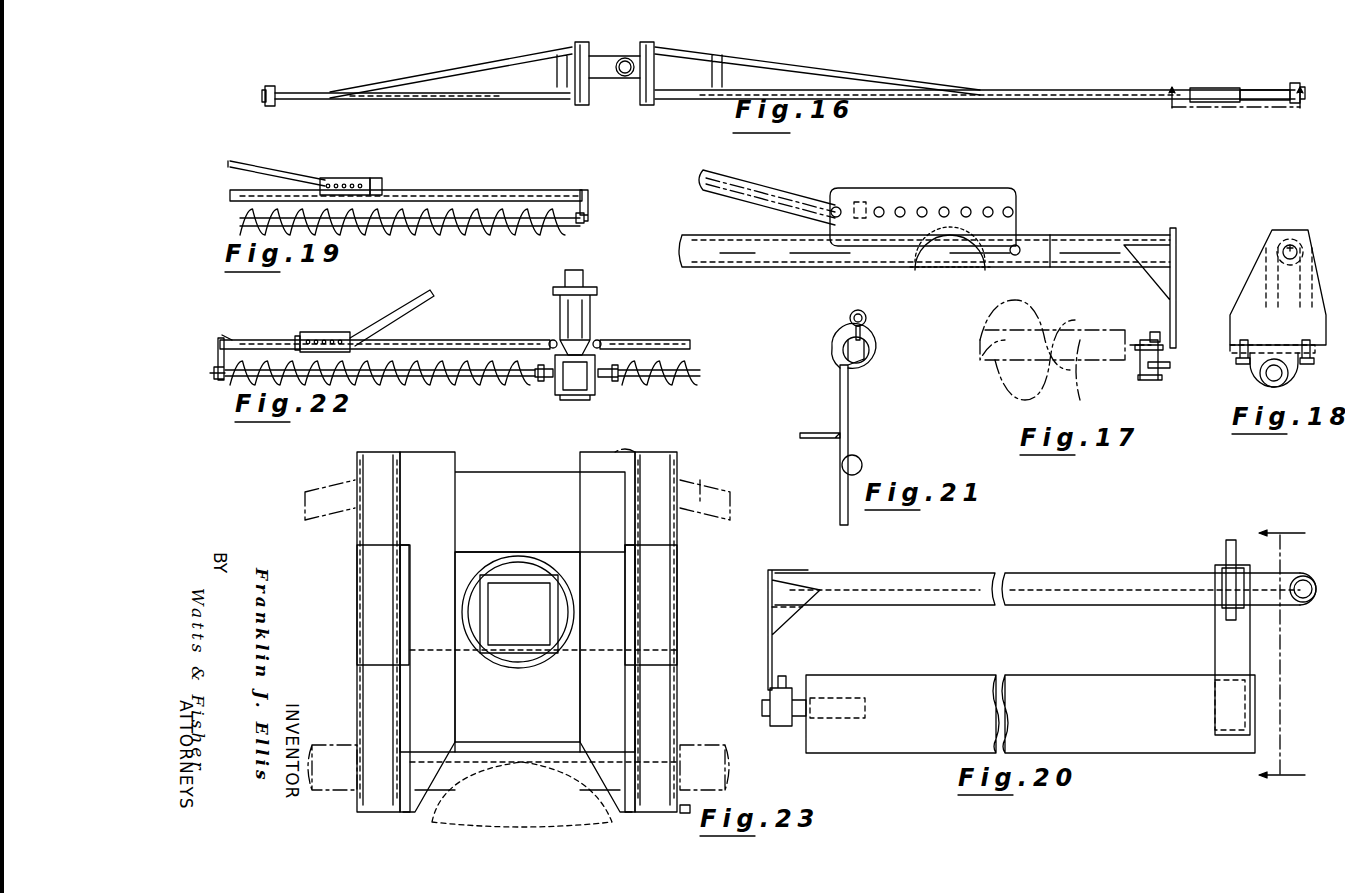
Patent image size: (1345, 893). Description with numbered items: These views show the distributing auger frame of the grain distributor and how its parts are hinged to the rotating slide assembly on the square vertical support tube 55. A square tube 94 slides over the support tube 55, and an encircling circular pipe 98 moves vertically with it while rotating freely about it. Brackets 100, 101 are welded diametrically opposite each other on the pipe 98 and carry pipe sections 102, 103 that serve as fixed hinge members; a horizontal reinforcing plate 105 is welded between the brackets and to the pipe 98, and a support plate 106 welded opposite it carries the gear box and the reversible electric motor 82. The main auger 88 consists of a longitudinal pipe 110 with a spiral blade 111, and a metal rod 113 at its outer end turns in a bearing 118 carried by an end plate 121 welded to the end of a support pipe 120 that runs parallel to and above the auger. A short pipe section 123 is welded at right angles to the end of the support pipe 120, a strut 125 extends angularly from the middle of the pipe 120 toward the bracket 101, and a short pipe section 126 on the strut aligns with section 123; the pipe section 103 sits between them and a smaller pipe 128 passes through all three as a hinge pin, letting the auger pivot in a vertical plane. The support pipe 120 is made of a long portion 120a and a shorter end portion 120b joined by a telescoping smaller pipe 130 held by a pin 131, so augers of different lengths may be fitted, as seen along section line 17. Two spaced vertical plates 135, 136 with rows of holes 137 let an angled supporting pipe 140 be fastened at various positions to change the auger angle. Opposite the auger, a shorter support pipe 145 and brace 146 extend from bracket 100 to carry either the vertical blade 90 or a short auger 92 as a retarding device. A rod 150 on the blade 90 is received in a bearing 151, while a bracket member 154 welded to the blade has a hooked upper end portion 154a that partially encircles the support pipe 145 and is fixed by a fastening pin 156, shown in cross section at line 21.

In FIG. 16, the section line 17- 17 is at (1241, 117).
In FIG. 20, the section line 21- 21 is at (1297, 655).
In FIG. 23, the square vertical support tube 55 is at (538, 619).
In FIG. 23, the reversible electric motor 82 is at (473, 785).
In FIG. 19, the auger 88 is at (423, 228).
In FIG. 22, the auger 88 is at (670, 393).
In FIG. 17, the auger 88 is at (982, 402).
In FIG. 21, the vertical blade 90 is at (836, 488).
In FIG. 20, the vertical blade 90 is at (930, 754).
In FIG. 22, the short auger 92 is at (434, 390).
In FIG. 23, the square tube 94 is at (494, 668).
In FIG. 16, the circular pipe 98 is at (624, 54).
In FIG. 23, the circular pipe 98 is at (551, 560).
In FIG. 23, the bracket 100 is at (450, 735).
In FIG. 23, the bracket 101 is at (615, 735).
In FIG. 16, the pipe section 102 is at (580, 58).
In FIG. 23, the pipe section 102 is at (355, 587).
In FIG. 16, the pipe section 103 is at (660, 60).
In FIG. 23, the pipe section 103 is at (670, 600).
In FIG. 23, the reinforcing plate 105 is at (513, 474).
In FIG. 23, the support plate 106 is at (561, 733).
In FIG. 17, the longitudinal pipe 110 is at (1067, 366).
In FIG. 17, the spiral blade 111 is at (1044, 338).
In FIG. 17, the metal rod 113 is at (1148, 378).
In FIG. 16, the bearing 118 is at (1296, 82).
In FIG. 19, the bearing 118 is at (587, 222).
In FIG. 17, the bearing 118 is at (1160, 368).
In FIG. 18, the bearing 118 is at (1292, 375).
In FIG. 16, the support pipe 120 is at (1002, 96).
In FIG. 19, the support pipe 120 is at (236, 190).
In FIG. 22, the support pipe 120 is at (668, 340).
In FIG. 17, the support pipe 120 is at (718, 268).
In FIG. 23, the support pipe 120 is at (692, 742).
In FIG. 17, the long portion of support pipe 120a is at (919, 268).
In FIG. 17, the shorter end portion of support pipe 120b is at (1088, 268).
In FIG. 18, the shorter end portion of support pipe 120b is at (1287, 232).
In FIG. 17, the end plate 121 is at (1170, 308).
In FIG. 18, the end plate 121 is at (1265, 266).
In FIG. 23, the short pipe section 123 is at (680, 810).
In FIG. 16, the strut 125 is at (864, 66).
In FIG. 23, the strut 125 is at (710, 523).
In FIG. 23, the short pipe section 126 is at (686, 480).
In FIG. 23, the pipe 128 is at (663, 450).
In FIG. 17, the smaller diameter pipe 130 is at (965, 265).
In FIG. 17, the pin 131 is at (1018, 248).
In FIG. 16, the vertical plate 135 is at (1220, 115).
In FIG. 19, the vertical plate 135 is at (375, 178).
In FIG. 22, the vertical plate 135 is at (295, 336).
In FIG. 17, the vertical plate 135 is at (1016, 194).
In FIG. 16, the vertical plate 136 is at (1205, 86).
In FIG. 19, the holes 137 is at (350, 178).
In FIG. 22, the holes 137 is at (313, 330).
In FIG. 17, the holes 137 is at (923, 206).
In FIG. 19, the angled supporting pipe 140 is at (280, 174).
In FIG. 17, the angled supporting pipe 140 is at (770, 178).
In FIG. 16, the shorter support pipe 145 is at (462, 98).
In FIG. 22, the shorter support pipe 145 is at (458, 340).
In FIG. 21, the shorter support pipe 145 is at (843, 358).
In FIG. 23, the shorter support pipe 145 is at (336, 794).
In FIG. 20, the shorter support pipe 145 is at (1077, 572).
In FIG. 16, the brace 146 is at (418, 67).
In FIG. 22, the brace 146 is at (380, 312).
In FIG. 23, the brace 146 is at (330, 482).
In FIG. 21, the rod 150 is at (860, 468).
In FIG. 20, the rod 150 is at (804, 696).
In FIG. 16, the bearing 151 is at (265, 102).
In FIG. 22, the bearing 151 is at (220, 383).
In FIG. 20, the bearing 151 is at (774, 738).
In FIG. 21, the bracket member 154 is at (848, 405).
In FIG. 20, the bracket member 154 is at (1214, 642).
In FIG. 21, the hooked upper end portion 154a is at (871, 355).
In FIG. 21, the fastening pin 156 is at (848, 330).
In FIG. 20, the fastening pin 156 is at (1226, 544).